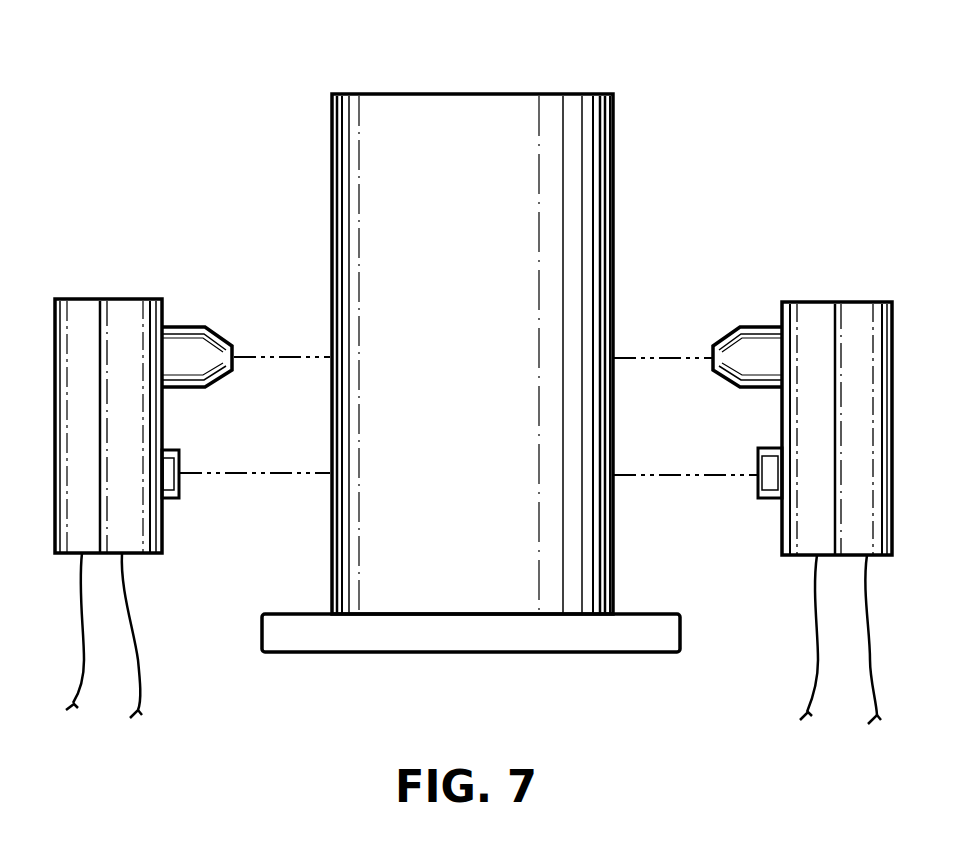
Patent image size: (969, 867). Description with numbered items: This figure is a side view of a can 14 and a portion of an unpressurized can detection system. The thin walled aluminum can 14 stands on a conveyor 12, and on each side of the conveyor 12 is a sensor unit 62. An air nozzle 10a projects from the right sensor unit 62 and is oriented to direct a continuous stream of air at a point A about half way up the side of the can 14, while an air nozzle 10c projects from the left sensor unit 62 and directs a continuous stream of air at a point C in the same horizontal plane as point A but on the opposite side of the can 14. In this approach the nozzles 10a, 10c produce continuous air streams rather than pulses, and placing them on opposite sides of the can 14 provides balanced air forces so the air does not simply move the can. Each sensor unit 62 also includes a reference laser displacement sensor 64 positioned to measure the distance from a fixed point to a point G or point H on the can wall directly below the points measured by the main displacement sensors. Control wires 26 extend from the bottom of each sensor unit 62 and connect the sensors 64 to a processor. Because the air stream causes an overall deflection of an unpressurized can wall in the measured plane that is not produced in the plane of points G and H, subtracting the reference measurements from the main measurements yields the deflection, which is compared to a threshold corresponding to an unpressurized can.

The can 14 is at (496, 94).
The conveyor 12 is at (350, 640).
The sensor units 62 is at (124, 299).
The air nozzle 10c is at (190, 327).
The air nozzle 10a is at (750, 327).
The reference laser displacement sensors 64 is at (180, 484).
The control wires 26 is at (84, 660).
The point C is at (328, 362).
The point H is at (328, 470).
The point A is at (615, 362).
The point G is at (615, 471).